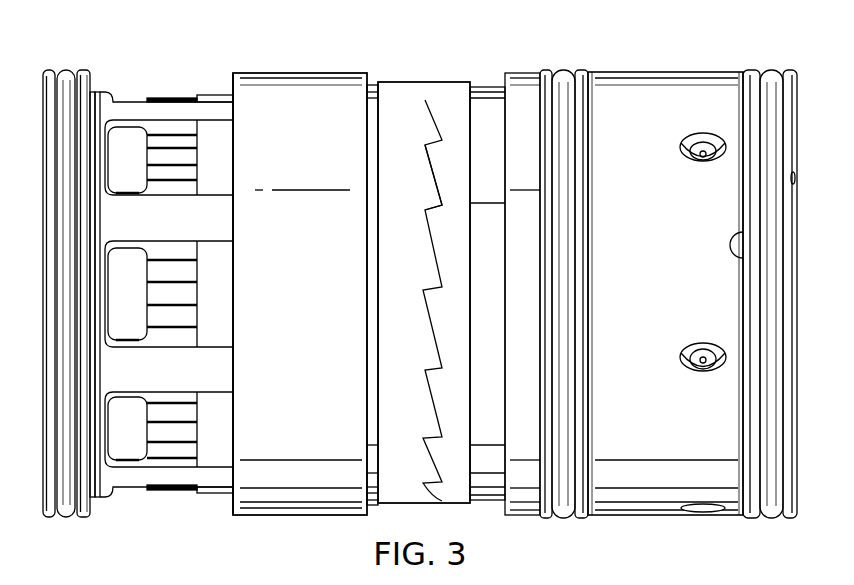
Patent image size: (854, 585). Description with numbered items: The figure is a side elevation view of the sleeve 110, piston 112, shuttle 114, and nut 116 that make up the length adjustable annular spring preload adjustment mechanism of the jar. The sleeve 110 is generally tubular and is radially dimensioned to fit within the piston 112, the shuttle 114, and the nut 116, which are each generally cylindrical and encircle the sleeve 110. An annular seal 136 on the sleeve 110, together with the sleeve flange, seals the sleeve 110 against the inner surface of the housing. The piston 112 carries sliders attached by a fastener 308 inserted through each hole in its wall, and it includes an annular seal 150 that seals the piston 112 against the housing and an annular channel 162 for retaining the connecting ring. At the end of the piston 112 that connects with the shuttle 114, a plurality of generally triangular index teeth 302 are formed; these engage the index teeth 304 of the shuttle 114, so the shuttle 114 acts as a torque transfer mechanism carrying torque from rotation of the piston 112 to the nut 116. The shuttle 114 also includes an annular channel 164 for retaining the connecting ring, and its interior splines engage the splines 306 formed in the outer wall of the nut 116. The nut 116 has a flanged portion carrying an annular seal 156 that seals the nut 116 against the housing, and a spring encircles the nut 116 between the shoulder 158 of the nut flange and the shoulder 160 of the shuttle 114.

The sleeve 110 is at (797, 86).
The piston 112 is at (665, 72).
The shuttle 114 is at (302, 73).
The nut 116 is at (130, 101).
The annular seal 136 is at (777, 80).
The annular seal 150 is at (561, 71).
The annular seal 156 is at (68, 78).
The shoulder 158 is at (93, 84).
The shoulder 160 is at (231, 82).
The annular channel 162 is at (495, 86).
The annular channel 164 is at (375, 81).
The index teeth 302 is at (440, 102).
The index teeth 304 is at (437, 138).
The splines 306 is at (220, 217).
The fastener 308 is at (690, 135).